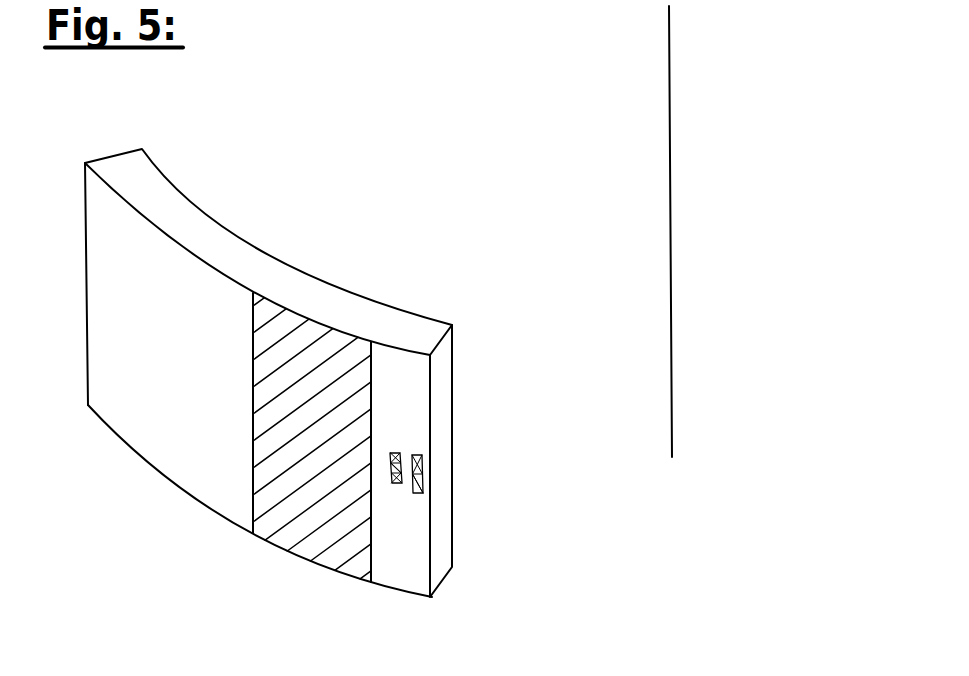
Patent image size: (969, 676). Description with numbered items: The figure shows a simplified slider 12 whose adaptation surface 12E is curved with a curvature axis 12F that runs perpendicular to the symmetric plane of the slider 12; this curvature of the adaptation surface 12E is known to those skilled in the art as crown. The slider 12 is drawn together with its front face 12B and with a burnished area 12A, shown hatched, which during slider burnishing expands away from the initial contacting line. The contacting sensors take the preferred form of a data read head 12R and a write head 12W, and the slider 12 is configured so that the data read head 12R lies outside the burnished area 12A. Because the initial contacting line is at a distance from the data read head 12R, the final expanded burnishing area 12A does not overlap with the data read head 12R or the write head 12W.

The slider 12 is at (201, 236).
The burnished area 12A is at (285, 535).
The front face 12B is at (438, 390).
The adaptation surface 12E is at (143, 437).
The curvature axis 12F is at (669, 147).
The data read head 12R is at (396, 485).
The write head 12W is at (423, 457).